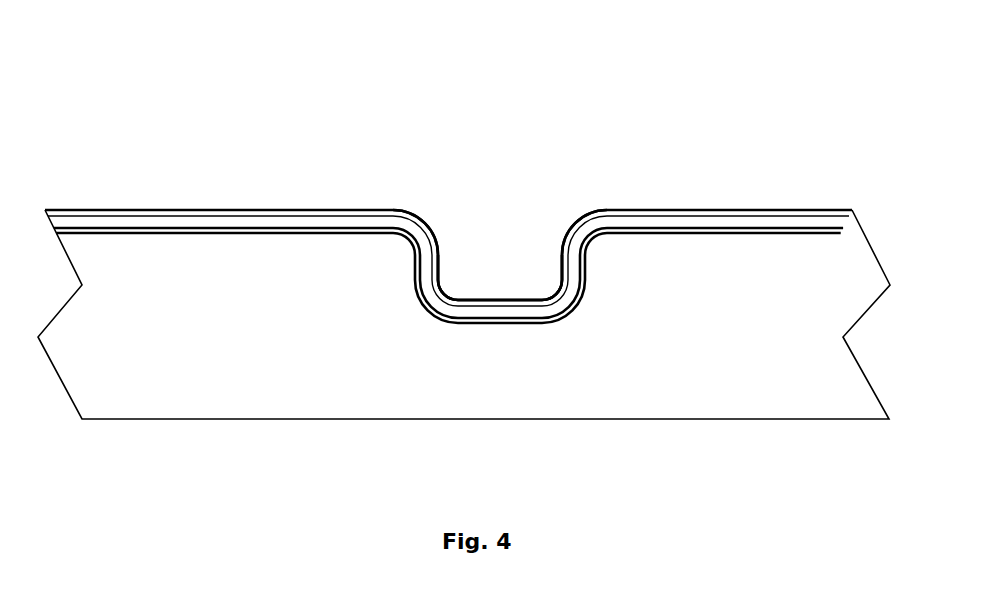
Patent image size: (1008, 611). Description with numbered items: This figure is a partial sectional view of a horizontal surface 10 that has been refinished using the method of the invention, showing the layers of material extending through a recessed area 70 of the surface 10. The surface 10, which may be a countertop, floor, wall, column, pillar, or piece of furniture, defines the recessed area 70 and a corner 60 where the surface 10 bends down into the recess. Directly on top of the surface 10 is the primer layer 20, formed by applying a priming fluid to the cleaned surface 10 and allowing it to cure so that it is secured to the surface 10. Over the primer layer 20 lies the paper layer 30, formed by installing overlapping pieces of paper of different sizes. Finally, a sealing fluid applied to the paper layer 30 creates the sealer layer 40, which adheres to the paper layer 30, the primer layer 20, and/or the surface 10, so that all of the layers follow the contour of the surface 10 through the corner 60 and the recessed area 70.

The surface 10 is at (464, 235).
The primer layer 20 is at (670, 218).
The paper layer 30 is at (741, 206).
The sealer layer 40 is at (829, 199).
The corner 60 is at (559, 191).
The recessed area 70 is at (486, 243).